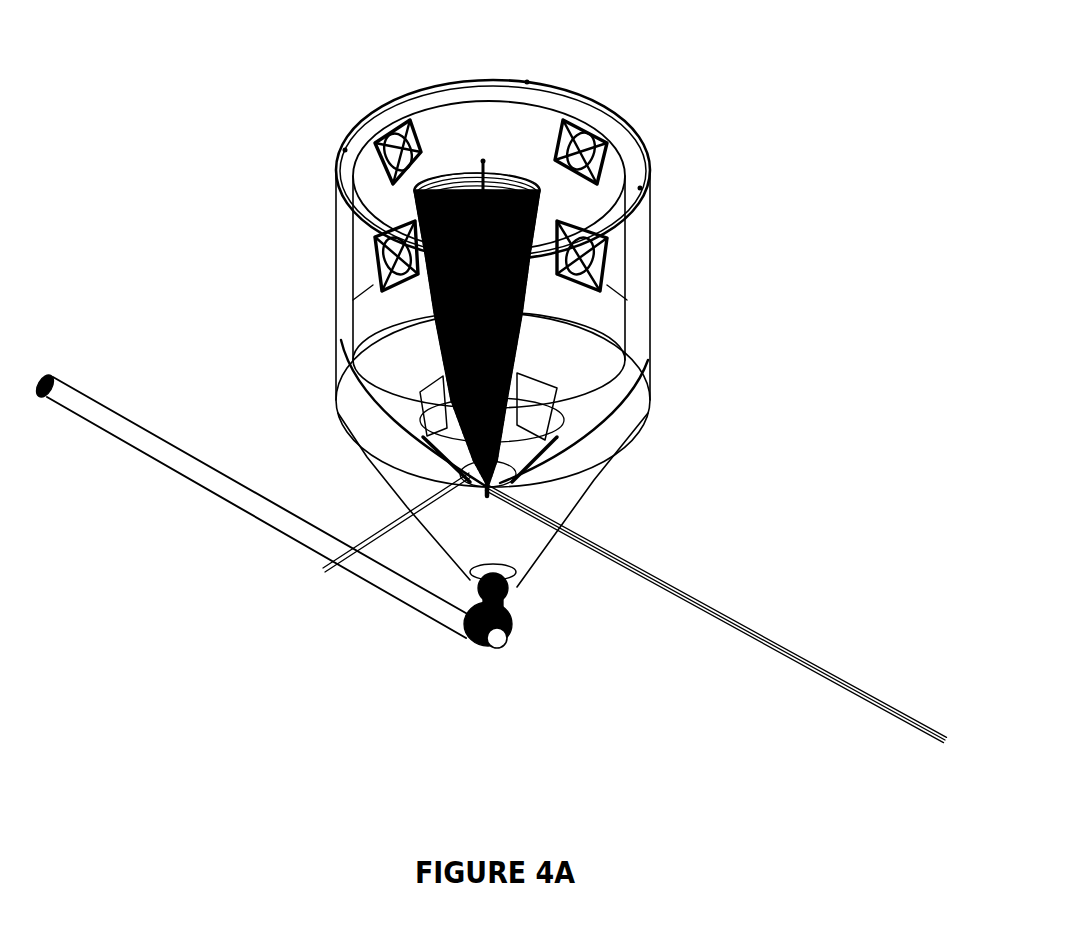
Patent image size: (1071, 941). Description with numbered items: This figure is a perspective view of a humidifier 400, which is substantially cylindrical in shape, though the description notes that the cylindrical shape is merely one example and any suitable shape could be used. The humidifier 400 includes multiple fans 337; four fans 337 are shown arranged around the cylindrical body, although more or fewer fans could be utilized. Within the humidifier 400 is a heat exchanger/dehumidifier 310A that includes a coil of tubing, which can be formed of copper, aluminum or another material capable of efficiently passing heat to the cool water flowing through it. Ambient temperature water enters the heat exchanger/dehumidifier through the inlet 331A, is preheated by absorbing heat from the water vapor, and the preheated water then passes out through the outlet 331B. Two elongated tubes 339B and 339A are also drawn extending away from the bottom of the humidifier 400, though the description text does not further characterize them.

The humidifier 400 is at (284, 80).
The heat exchanger/dehumidifier 310A is at (460, 176).
The outlet 331B is at (483, 163).
The fans 337 is at (604, 263).
The second tube 339B is at (222, 487).
The inlet 331A is at (380, 524).
The first tube 339A is at (680, 596).